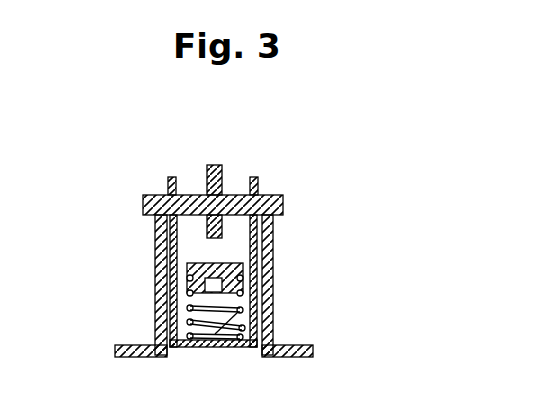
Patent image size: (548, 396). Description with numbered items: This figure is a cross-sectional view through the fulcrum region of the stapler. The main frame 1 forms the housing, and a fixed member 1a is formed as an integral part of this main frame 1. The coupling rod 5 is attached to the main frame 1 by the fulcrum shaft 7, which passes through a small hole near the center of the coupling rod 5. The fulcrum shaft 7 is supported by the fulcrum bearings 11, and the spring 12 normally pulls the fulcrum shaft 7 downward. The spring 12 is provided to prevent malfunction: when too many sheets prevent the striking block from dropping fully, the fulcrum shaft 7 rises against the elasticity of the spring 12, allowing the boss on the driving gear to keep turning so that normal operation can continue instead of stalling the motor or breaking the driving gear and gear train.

The main frame 1 is at (155, 285).
The fixed member 1a is at (247, 265).
The coupling rod 5 is at (215, 166).
The fulcrum shaft 7 is at (283, 200).
The fulcrum bearings 11 is at (256, 180).
The spring 12 is at (243, 310).